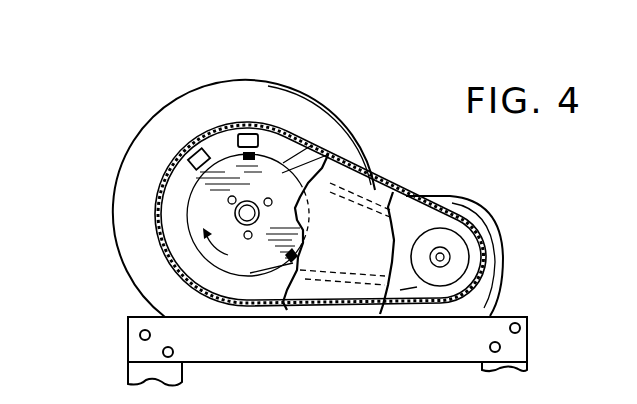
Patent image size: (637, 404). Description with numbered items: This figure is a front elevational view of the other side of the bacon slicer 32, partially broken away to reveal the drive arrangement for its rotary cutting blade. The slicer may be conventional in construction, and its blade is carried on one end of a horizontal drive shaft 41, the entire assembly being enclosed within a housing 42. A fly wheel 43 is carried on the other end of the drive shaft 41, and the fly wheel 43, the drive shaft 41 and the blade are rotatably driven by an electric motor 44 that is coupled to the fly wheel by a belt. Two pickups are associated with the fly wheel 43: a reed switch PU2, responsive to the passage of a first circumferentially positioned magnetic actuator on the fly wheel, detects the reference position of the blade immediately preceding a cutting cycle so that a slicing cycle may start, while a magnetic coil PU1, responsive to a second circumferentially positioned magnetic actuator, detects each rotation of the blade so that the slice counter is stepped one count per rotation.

The bacon slicer 32 is at (140, 119).
The drive shaft 41 is at (246, 213).
The housing 42 is at (365, 229).
The fly wheel 43 is at (297, 142).
The electric motor 44 is at (478, 206).
The magnetic coil PU1 is at (248, 134).
The reed switch PU2 is at (195, 151).